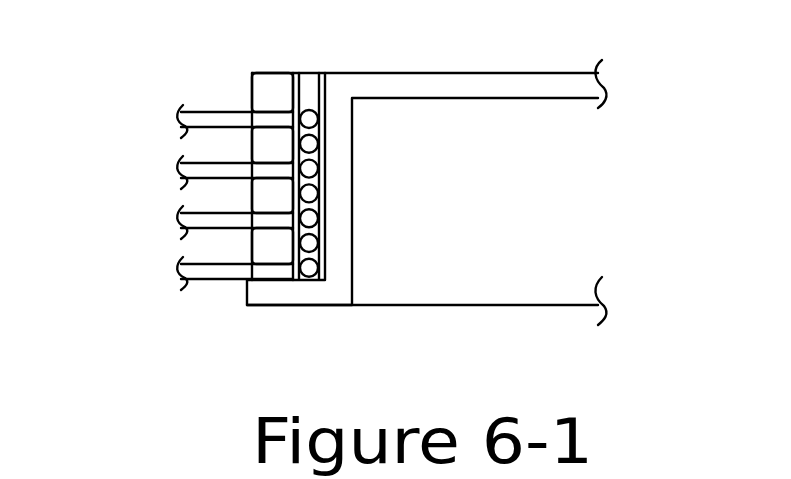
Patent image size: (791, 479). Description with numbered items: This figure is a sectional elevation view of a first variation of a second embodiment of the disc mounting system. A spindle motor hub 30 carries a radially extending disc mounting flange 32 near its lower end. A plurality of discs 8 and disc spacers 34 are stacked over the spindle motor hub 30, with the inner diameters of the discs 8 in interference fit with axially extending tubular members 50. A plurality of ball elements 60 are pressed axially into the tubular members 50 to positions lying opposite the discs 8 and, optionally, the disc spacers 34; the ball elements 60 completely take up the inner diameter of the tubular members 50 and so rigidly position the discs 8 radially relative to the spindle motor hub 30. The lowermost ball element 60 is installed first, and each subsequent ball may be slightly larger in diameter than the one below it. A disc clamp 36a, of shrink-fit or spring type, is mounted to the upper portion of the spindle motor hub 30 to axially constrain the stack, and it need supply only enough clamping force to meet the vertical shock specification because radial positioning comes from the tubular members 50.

The spindle motor hub 30 is at (495, 87).
The disc clamp 36a is at (270, 92).
The disc spacers 34 is at (186, 197).
The discs 8 is at (200, 272).
The tubular members 50 is at (325, 172).
The ball elements 60 is at (307, 240).
The disc mounting flange 32 is at (268, 293).